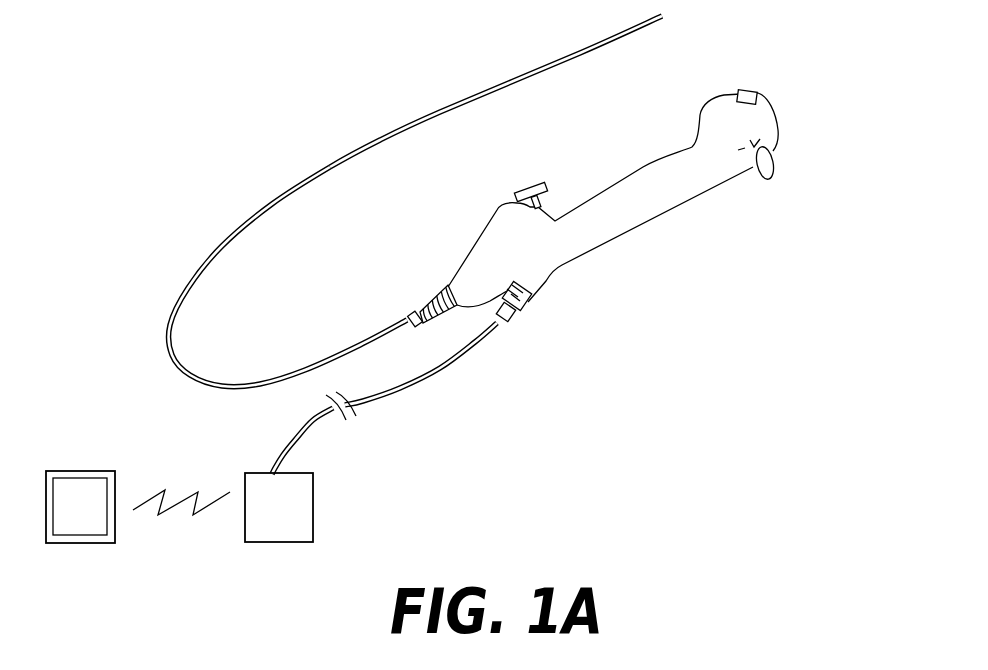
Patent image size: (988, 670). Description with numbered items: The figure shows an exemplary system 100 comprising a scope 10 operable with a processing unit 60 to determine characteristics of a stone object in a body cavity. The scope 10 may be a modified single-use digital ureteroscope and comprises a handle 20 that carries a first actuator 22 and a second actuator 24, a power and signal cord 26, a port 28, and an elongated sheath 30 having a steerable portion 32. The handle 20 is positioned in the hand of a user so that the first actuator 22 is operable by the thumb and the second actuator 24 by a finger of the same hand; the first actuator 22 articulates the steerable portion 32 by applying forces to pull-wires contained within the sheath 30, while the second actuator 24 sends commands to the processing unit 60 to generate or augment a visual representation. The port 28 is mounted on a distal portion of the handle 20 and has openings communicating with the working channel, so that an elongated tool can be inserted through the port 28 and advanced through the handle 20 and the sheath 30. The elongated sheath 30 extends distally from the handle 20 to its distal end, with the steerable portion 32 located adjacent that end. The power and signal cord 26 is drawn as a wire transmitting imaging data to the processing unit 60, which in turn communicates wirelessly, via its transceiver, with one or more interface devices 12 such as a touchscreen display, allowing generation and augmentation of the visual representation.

The system 100 is at (470, 277).
The scope 10 is at (671, 171).
The handle 20 is at (630, 213).
The first actuator 22 is at (773, 163).
The second actuator 24 is at (750, 92).
The power and signal cord 26 is at (473, 353).
The port 28 is at (548, 186).
The elongated sheath 30 is at (165, 312).
The steerable portion 32 is at (577, 52).
The interface device 12 is at (90, 518).
The processing unit 60 is at (290, 520).